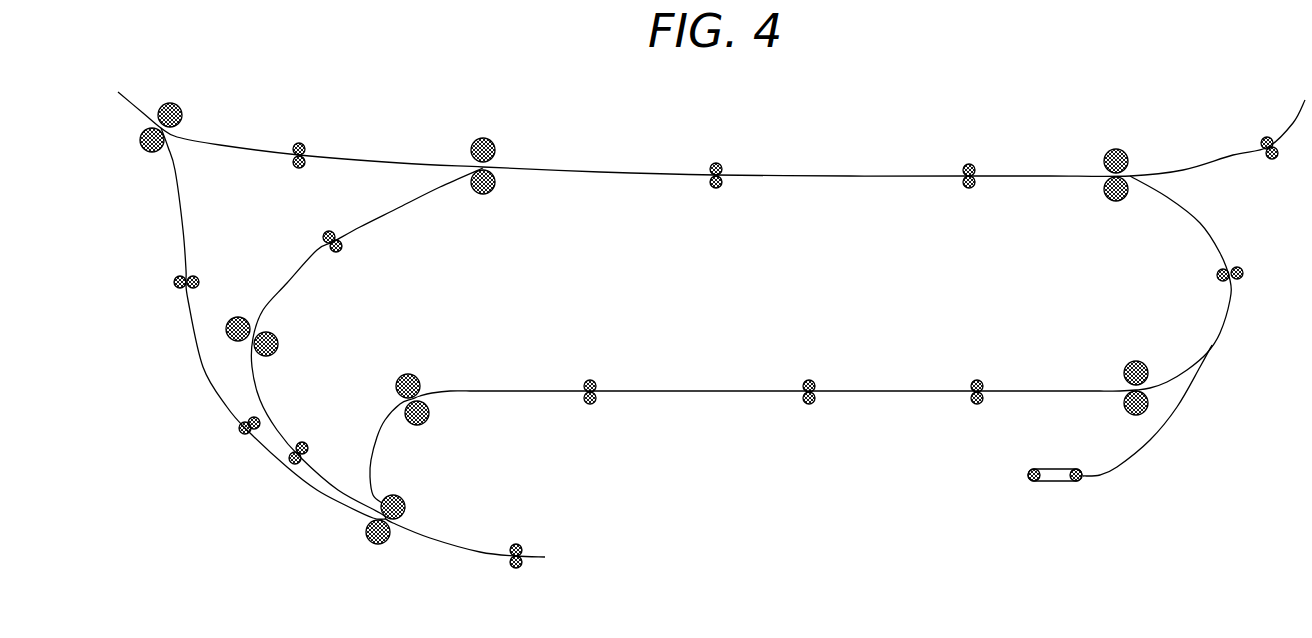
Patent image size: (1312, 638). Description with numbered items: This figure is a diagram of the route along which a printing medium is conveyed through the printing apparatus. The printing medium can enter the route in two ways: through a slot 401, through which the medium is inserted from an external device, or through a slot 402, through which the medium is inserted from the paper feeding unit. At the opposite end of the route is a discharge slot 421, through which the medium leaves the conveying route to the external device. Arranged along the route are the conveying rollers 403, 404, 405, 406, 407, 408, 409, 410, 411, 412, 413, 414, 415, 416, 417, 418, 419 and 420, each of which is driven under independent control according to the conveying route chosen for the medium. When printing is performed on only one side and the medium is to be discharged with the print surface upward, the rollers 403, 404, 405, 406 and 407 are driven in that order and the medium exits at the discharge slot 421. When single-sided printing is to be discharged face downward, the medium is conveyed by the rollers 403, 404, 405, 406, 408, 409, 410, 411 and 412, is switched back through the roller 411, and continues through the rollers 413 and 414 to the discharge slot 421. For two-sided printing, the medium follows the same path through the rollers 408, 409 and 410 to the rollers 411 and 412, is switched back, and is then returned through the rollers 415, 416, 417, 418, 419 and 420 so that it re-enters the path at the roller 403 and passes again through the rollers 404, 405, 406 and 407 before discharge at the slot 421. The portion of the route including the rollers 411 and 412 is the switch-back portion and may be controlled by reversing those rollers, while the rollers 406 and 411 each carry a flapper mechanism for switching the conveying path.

The slot 401 is at (1265, 137).
The slot 402 is at (1055, 484).
The conveying roller 403 is at (1117, 148).
The conveying roller 404 is at (969, 163).
The conveying roller 405 is at (716, 162).
The conveying roller 406 is at (484, 137).
The conveying roller 407 is at (299, 142).
The conveying roller 408 is at (323, 233).
The conveying roller 409 is at (236, 316).
The conveying roller 410 is at (305, 442).
The conveying roller 411 is at (378, 545).
The conveying roller 412 is at (516, 543).
The conveying roller 413 is at (239, 430).
The conveying roller 414 is at (175, 277).
The conveying roller 415 is at (409, 373).
The conveying roller 416 is at (591, 379).
The conveying roller 417 is at (810, 379).
The conveying roller 418 is at (977, 379).
The conveying roller 419 is at (1138, 360).
The conveying roller 420 is at (1242, 268).
The discharge slot 421 is at (172, 102).